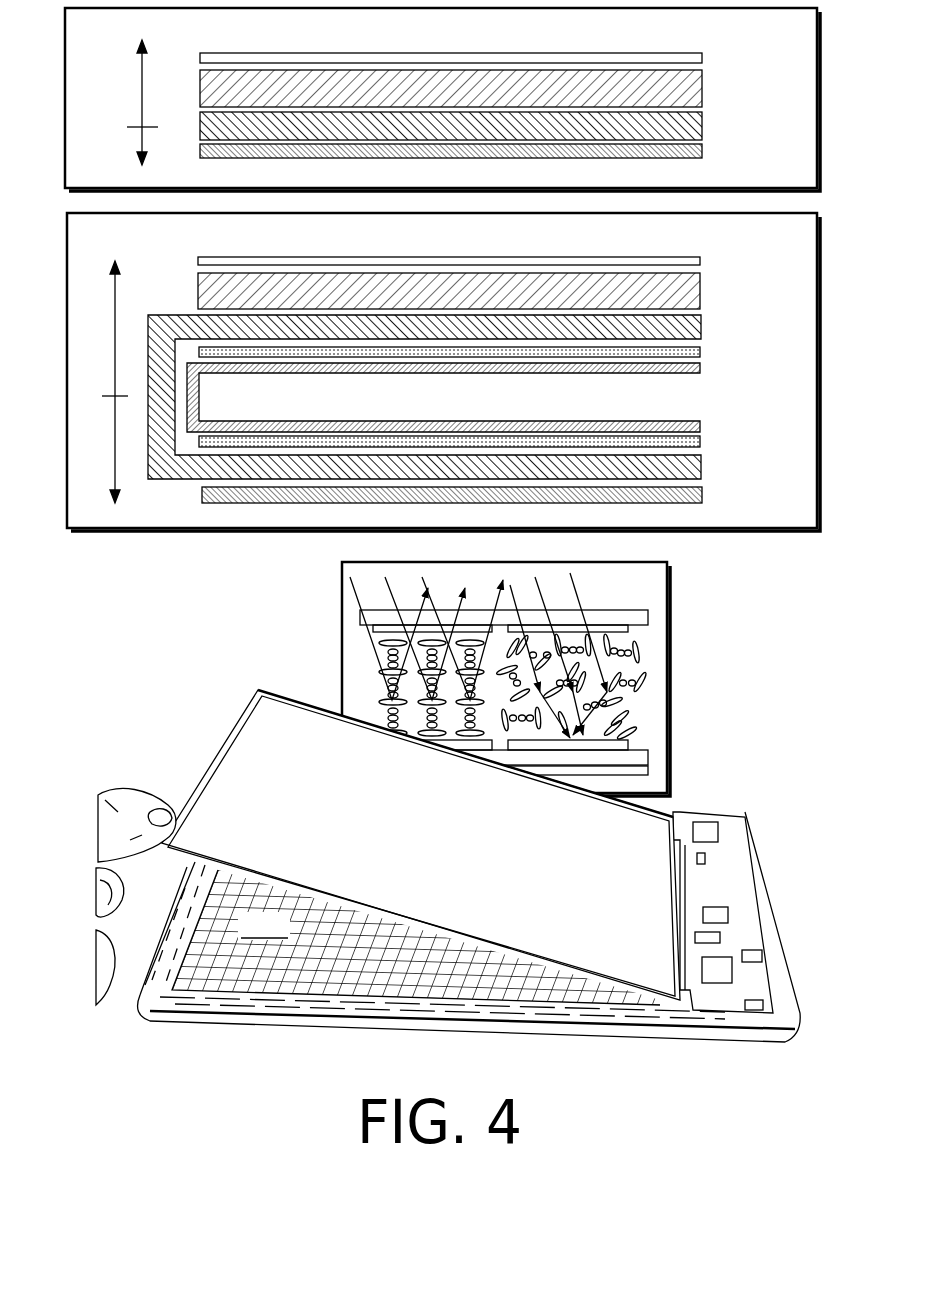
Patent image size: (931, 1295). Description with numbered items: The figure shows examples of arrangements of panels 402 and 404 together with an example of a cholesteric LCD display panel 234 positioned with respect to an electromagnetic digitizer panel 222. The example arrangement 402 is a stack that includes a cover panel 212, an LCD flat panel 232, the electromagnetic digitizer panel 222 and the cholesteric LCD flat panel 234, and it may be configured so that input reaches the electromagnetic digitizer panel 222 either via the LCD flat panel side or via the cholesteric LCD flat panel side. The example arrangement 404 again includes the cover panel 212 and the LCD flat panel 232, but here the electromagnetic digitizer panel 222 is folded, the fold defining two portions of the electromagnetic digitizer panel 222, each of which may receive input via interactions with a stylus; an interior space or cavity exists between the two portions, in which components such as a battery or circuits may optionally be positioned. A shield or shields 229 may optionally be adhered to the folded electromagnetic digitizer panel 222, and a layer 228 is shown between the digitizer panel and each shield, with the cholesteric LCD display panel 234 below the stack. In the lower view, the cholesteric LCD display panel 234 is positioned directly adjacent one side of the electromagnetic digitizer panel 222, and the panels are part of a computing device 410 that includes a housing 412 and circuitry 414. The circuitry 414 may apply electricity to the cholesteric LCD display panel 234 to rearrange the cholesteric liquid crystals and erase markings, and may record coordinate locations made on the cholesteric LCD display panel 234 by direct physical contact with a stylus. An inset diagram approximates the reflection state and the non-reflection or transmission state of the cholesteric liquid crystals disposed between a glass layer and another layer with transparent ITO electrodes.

The example arrangement 402 is at (550, 38).
The example arrangement 404 is at (590, 244).
The cover panel 212 is at (703, 57).
The LCD flat panel 232 is at (703, 87).
The electromagnetic digitizer panel 222 is at (703, 123).
The electrode layer 228 is at (700, 352).
The shield 229 is at (700, 369).
The cholesteric LCD display panel 234 is at (703, 148).
The computing device 410 is at (770, 838).
The housing 412 is at (730, 1037).
The circuitry 414 is at (742, 892).